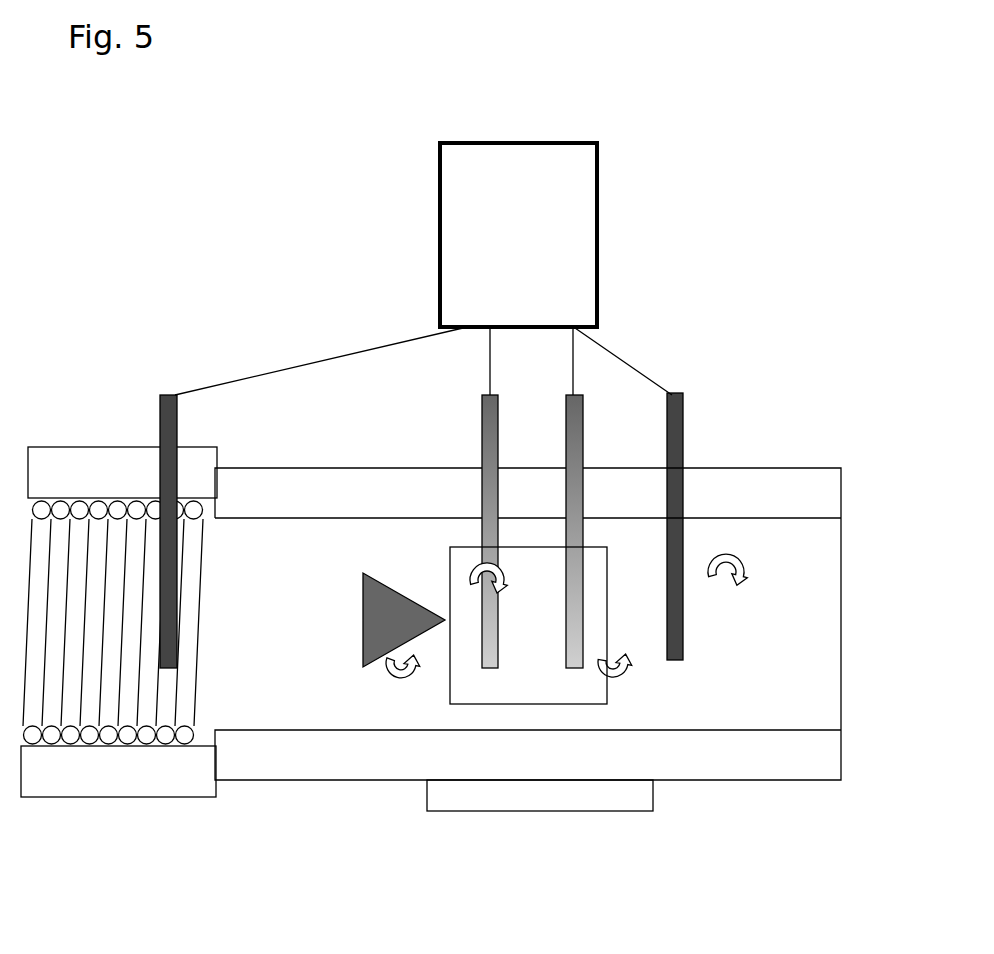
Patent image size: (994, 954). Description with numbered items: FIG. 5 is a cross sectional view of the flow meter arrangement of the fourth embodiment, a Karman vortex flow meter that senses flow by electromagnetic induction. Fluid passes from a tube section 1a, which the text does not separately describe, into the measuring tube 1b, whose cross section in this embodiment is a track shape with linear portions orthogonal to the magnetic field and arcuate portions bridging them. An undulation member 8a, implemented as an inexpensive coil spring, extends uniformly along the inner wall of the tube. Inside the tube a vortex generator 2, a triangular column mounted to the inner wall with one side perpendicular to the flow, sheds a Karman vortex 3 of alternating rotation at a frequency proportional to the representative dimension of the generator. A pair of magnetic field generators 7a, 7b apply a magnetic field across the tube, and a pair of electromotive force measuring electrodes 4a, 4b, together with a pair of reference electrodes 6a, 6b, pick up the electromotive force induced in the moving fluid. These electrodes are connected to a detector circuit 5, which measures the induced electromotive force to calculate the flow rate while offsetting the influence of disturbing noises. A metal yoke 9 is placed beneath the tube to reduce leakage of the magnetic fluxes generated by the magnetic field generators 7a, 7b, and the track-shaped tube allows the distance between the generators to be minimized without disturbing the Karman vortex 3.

The first holding member 1a is at (95, 450).
The measuring tube 1b is at (752, 467).
The vortex generator 2 is at (382, 648).
The Karman vortex 3 is at (397, 690).
The electromotive force measuring electrode 4a is at (482, 418).
The electromotive force measuring electrode 4b is at (566, 420).
The detector circuit 5 is at (593, 268).
The reference electrode 6a is at (166, 393).
The reference electrode 6b is at (684, 410).
The magnetic field generator 7a is at (517, 724).
The magnetic field generator 7b is at (493, 692).
The undulation member 8a is at (106, 740).
The metal yoke 9 is at (618, 797).